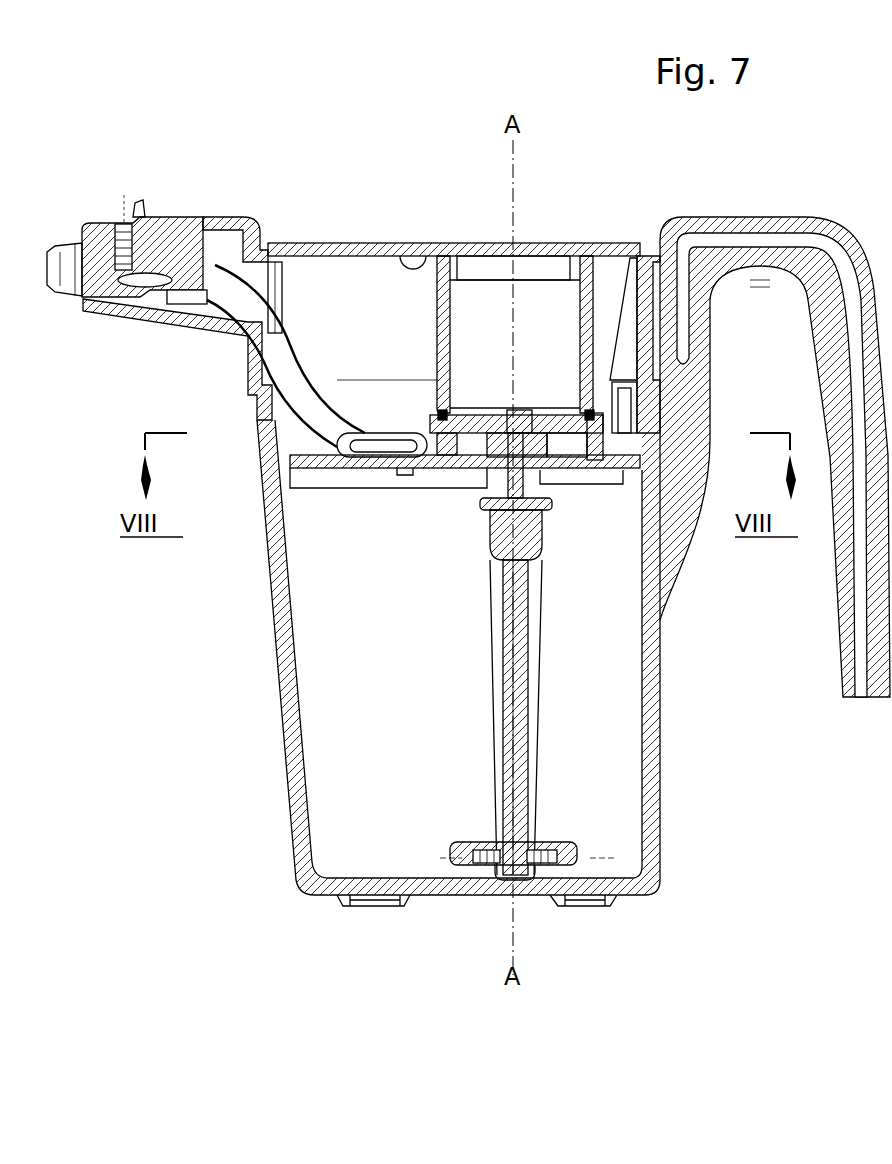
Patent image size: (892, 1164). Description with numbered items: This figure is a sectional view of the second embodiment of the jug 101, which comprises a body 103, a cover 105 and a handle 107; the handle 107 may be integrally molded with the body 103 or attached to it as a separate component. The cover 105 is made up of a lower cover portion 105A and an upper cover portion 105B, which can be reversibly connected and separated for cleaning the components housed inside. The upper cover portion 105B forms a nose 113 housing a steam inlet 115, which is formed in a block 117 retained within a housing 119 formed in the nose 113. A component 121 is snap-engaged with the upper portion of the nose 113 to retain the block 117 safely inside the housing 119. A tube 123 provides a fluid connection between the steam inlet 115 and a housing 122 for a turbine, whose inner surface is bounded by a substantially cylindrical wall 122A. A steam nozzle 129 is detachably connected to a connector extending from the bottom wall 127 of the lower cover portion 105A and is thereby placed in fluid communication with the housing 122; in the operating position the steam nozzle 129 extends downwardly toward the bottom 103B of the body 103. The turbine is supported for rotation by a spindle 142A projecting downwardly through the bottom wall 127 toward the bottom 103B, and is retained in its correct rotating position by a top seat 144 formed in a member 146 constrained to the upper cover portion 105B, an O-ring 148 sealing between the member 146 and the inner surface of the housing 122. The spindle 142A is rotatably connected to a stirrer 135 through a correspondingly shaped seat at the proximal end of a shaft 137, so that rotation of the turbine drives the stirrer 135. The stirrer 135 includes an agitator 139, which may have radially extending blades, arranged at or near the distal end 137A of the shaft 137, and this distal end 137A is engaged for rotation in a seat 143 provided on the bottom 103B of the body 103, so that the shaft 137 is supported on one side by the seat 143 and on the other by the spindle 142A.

The jug 101 is at (546, 186).
The body 103 is at (312, 626).
The bottom 103B is at (380, 886).
The cover 105 is at (451, 236).
The lower cover portion 105A is at (312, 452).
The upper cover portion 105B is at (410, 266).
The handle 107 is at (853, 648).
The nose 113 is at (165, 210).
The steam inlet 115 is at (125, 225).
The block 117 is at (178, 233).
The housing 119 is at (240, 242).
The component 121 is at (200, 320).
The housing 122 is at (466, 430).
The cylindrical wall 122A is at (564, 440).
The tube 123 is at (283, 343).
The bottom wall 127 is at (580, 462).
The steam nozzle 129 is at (542, 624).
The stirrer 135 is at (500, 579).
The shaft 137 is at (505, 742).
The distal end 137A is at (520, 870).
The agitator 139 is at (550, 853).
The spindle 142A is at (518, 507).
The seat 143 is at (535, 880).
The top seat 144 is at (513, 412).
The member 146 is at (580, 295).
The O-ring 148 is at (437, 412).